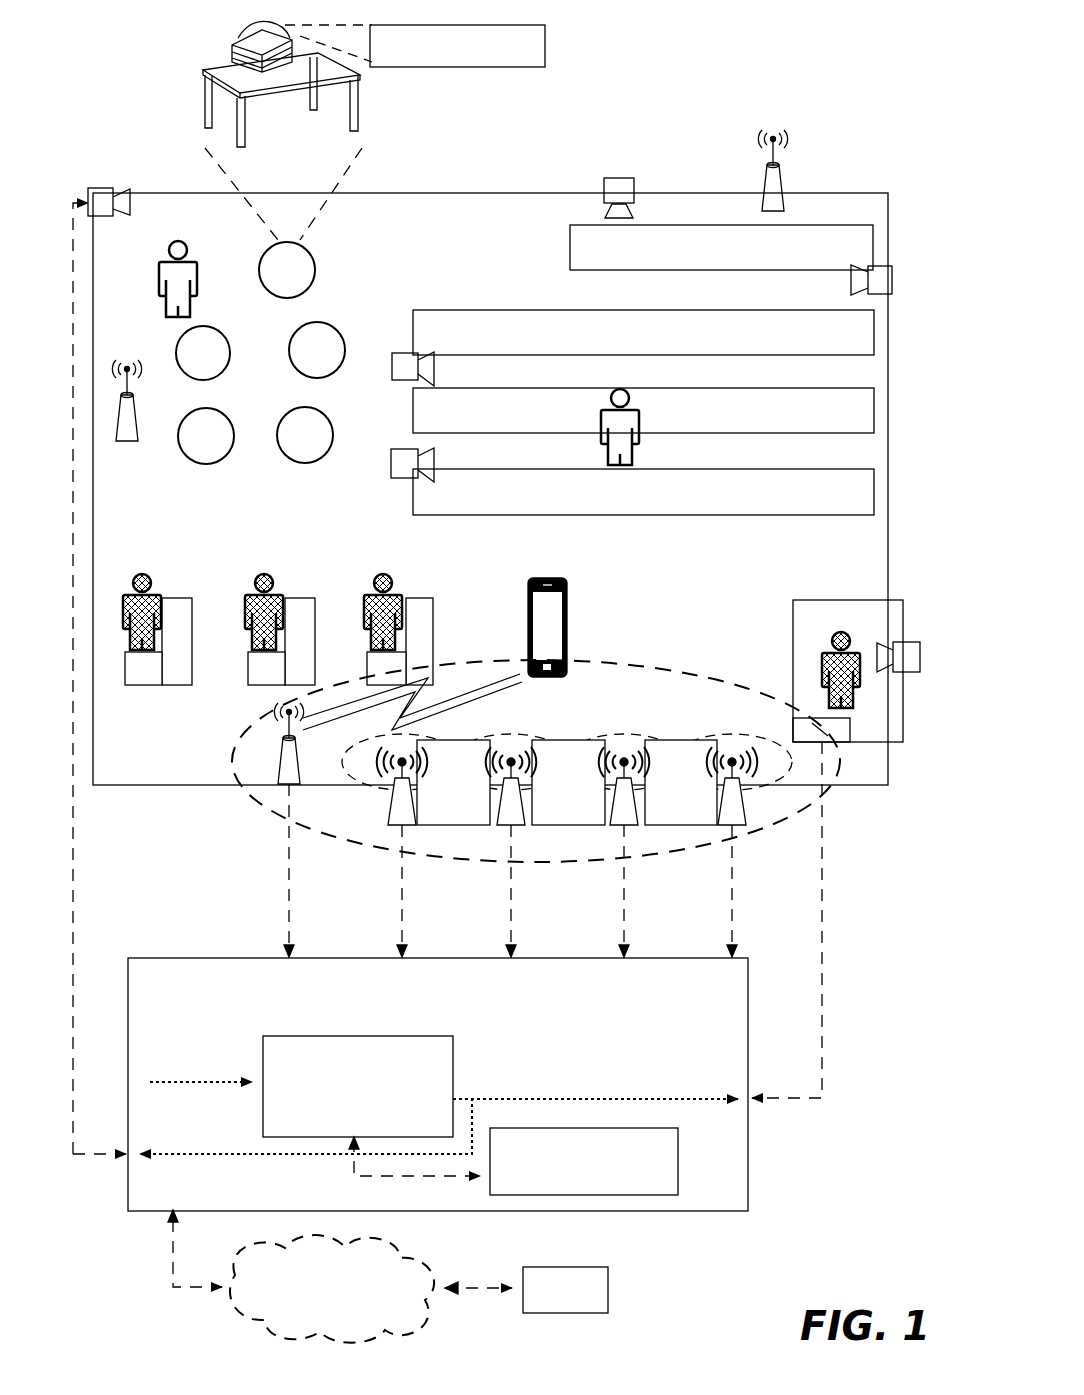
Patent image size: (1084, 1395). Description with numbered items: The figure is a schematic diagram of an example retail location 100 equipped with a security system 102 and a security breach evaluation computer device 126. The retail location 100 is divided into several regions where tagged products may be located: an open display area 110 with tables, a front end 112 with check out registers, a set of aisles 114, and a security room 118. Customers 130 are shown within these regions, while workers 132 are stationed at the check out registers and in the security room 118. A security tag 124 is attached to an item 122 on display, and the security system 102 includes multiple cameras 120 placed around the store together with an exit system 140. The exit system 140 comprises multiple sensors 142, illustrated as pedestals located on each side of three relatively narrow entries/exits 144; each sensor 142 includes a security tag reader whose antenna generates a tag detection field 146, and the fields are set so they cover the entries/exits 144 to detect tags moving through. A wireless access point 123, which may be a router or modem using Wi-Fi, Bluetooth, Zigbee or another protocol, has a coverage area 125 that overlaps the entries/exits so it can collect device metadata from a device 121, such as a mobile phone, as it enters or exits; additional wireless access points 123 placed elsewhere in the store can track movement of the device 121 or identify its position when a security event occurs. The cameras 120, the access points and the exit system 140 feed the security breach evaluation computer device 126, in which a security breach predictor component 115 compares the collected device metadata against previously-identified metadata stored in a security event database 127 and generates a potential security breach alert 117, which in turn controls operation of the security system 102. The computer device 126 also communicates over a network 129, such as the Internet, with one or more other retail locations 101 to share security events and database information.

The retail location 100 is at (160, 190).
The other retail location 101 is at (565, 1290).
The security system 102 is at (113, 157).
The open display area 110 is at (362, 272).
The front end 112 is at (502, 688).
The aisles 114 is at (848, 372).
The security breach predictor component 115 is at (358, 1086).
The potential security breach alert 117 is at (439, 1097).
The security room 118 is at (887, 612).
The camera 120 is at (89, 192).
The device 121 is at (567, 636).
The item 122 is at (245, 40).
The wireless access point 123 is at (784, 190).
The security tag 124 is at (548, 46).
The coverage area 125 is at (262, 805).
The security breach evaluation computer device 126 is at (140, 958).
The security event database 127 is at (513, 1161).
The network 129 is at (340, 1276).
The customer 130 is at (183, 241).
The worker 132 is at (143, 574).
The exit system 140 is at (782, 810).
The sensor 142 is at (745, 832).
The entries/exits 144 is at (567, 782).
The tag detection field 146 is at (822, 762).